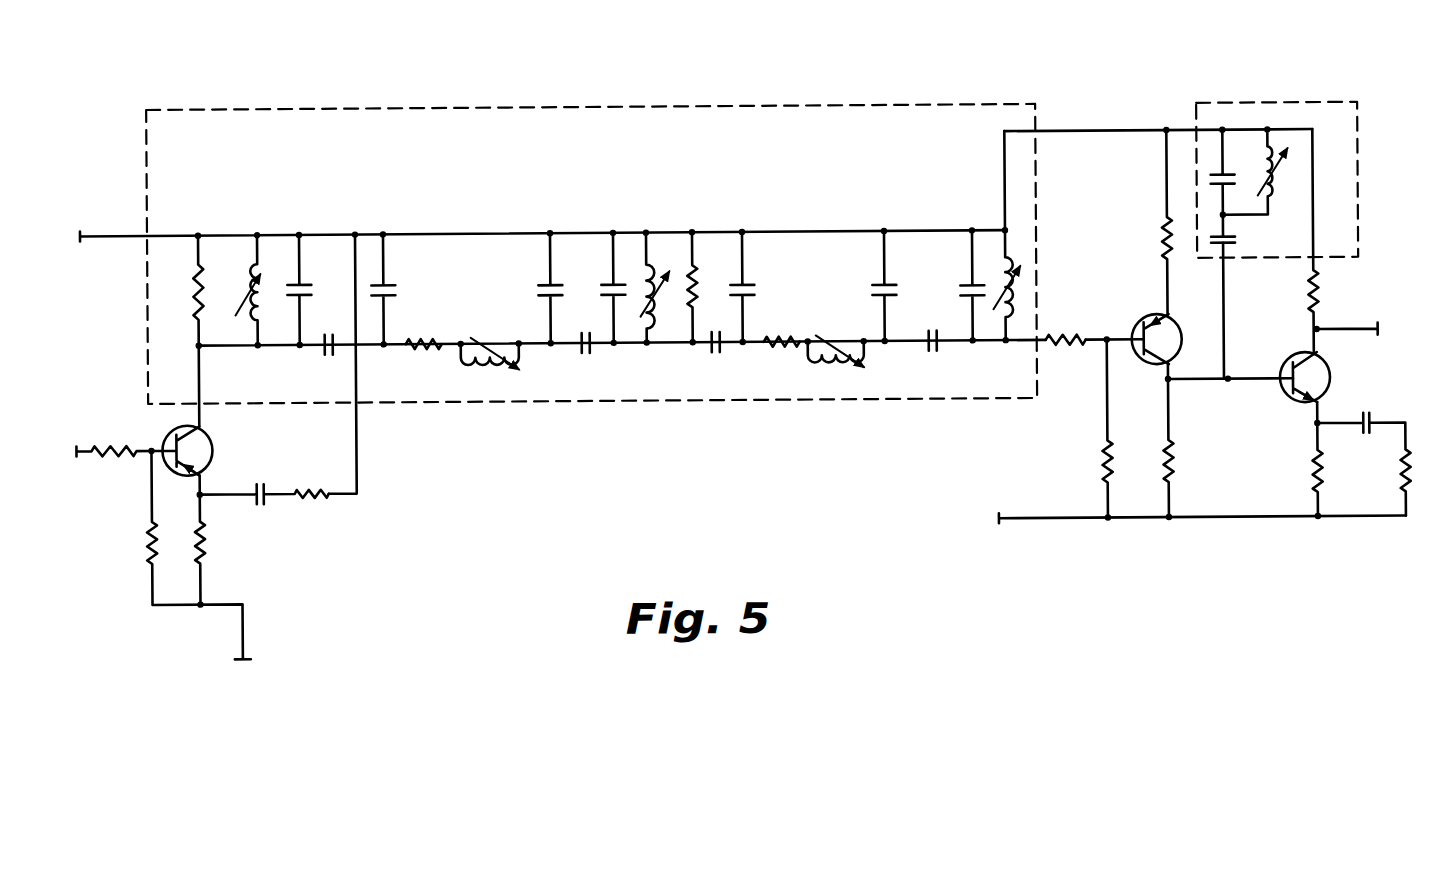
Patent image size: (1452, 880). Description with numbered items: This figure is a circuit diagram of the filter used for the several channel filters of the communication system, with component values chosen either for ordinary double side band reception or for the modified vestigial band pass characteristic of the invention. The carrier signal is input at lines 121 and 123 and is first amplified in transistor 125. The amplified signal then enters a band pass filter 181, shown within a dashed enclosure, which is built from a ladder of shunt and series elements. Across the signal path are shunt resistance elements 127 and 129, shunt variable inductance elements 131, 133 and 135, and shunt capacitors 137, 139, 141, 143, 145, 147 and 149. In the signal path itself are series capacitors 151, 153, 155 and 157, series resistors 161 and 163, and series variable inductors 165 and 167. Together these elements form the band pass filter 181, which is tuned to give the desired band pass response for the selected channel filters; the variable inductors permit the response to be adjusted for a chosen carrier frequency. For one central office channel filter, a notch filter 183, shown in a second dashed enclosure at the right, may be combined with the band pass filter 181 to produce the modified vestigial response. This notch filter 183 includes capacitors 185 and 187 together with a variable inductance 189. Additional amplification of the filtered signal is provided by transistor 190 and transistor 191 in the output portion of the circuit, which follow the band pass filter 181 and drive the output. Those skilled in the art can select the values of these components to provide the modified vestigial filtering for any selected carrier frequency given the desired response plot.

The input line 121 is at (103, 238).
The input line 123 is at (112, 448).
The transistor 125 is at (212, 458).
The shunt resistance element 127 is at (240, 292).
The shunt resistance element 129 is at (700, 286).
The shunt variable inductance element 131 is at (252, 300).
The shunt variable inductance element 133 is at (664, 326).
The shunt variable inductance element 135 is at (1016, 308).
The shunt capacitor 137 is at (308, 290).
The shunt capacitor 139 is at (398, 292).
The shunt capacitor 141 is at (540, 291).
The shunt capacitor 143 is at (604, 292).
The shunt capacitor 145 is at (754, 292).
The shunt capacitor 147 is at (897, 294).
The shunt capacitor 149 is at (960, 292).
The series capacitor 151 is at (328, 358).
The series capacitor 153 is at (583, 358).
The series capacitor 155 is at (716, 358).
The series capacitor 157 is at (935, 358).
The series resistor 161 is at (424, 352).
The series resistor 163 is at (778, 340).
The series variable inductor 165 is at (476, 366).
The series variable inductor 167 is at (840, 366).
The band pass filter 181 is at (902, 104).
The notch filter 183 is at (1277, 109).
The capacitor 185 is at (1240, 184).
The capacitor 187 is at (1236, 252).
The variable inductance 189 is at (1271, 178).
The transistor 190 is at (1150, 322).
The transistor 191 is at (1328, 380).